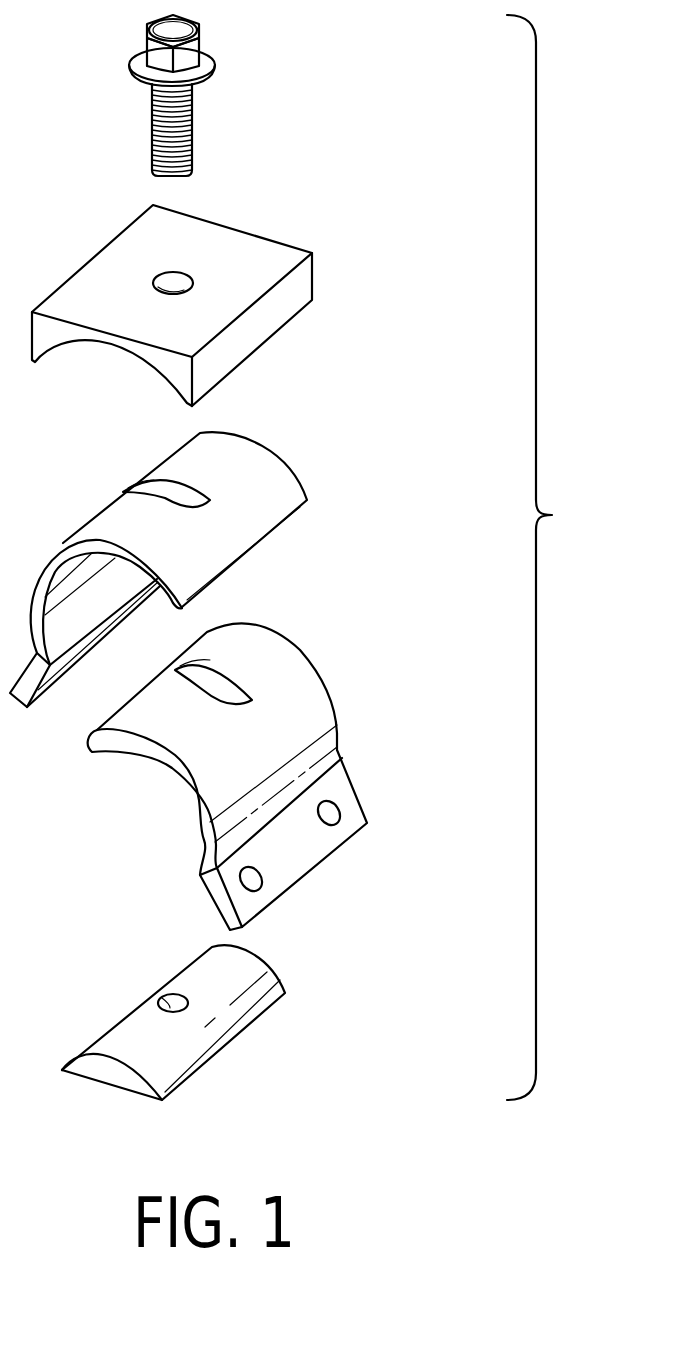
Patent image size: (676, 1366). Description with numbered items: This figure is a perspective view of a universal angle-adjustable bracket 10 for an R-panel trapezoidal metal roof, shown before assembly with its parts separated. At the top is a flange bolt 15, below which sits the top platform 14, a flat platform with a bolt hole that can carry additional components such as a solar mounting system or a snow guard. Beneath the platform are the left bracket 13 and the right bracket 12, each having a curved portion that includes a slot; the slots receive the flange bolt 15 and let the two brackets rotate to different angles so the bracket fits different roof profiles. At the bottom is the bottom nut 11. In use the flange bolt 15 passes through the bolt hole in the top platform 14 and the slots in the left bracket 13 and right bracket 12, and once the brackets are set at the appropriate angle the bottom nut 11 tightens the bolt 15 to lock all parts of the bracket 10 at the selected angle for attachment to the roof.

The universal angle-adjustable bracket 10 is at (544, 557).
The bottom nut 11 is at (117, 1017).
The right bracket 12 is at (300, 640).
The left bracket 13 is at (273, 447).
The top platform 14 is at (287, 243).
The flange bolt 15 is at (193, 126).